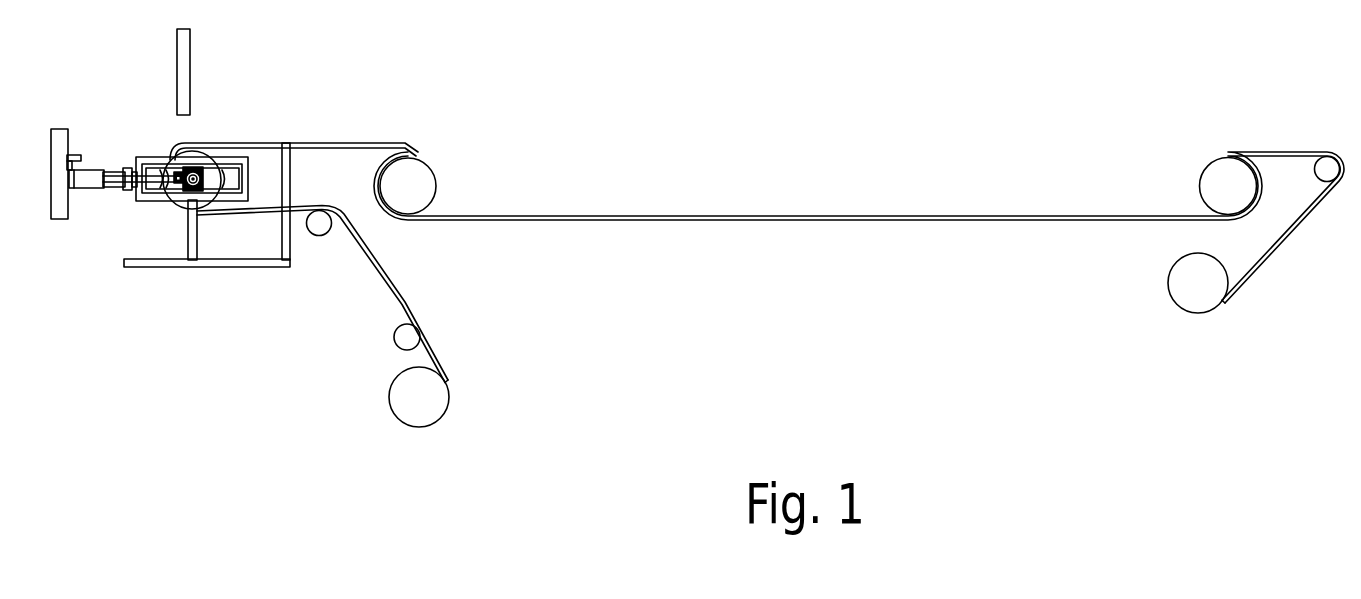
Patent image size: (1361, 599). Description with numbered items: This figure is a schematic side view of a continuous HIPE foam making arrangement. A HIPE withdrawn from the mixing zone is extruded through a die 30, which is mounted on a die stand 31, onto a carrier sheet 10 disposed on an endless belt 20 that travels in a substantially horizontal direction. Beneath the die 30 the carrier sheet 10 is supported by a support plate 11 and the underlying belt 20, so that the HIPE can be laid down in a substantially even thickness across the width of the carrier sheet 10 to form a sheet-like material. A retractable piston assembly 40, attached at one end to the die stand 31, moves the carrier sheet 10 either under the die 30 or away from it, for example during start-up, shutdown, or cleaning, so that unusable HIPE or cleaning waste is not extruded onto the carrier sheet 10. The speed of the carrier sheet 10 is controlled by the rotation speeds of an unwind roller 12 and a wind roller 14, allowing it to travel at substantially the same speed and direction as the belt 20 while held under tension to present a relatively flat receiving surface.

The carrier sheet 10 is at (229, 143).
The support plate 11 is at (327, 147).
The unwind roller 12 is at (402, 408).
The wind roller 14 is at (1183, 292).
The endless belt 20 is at (393, 158).
The die 30 is at (185, 88).
The die stand 31 is at (58, 211).
The retractable piston assembly 40 is at (165, 202).